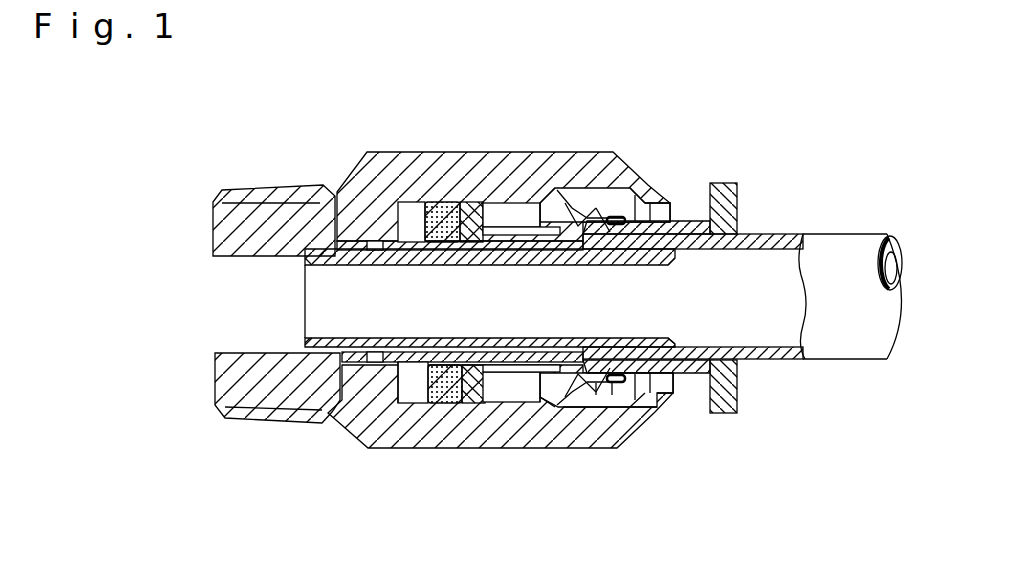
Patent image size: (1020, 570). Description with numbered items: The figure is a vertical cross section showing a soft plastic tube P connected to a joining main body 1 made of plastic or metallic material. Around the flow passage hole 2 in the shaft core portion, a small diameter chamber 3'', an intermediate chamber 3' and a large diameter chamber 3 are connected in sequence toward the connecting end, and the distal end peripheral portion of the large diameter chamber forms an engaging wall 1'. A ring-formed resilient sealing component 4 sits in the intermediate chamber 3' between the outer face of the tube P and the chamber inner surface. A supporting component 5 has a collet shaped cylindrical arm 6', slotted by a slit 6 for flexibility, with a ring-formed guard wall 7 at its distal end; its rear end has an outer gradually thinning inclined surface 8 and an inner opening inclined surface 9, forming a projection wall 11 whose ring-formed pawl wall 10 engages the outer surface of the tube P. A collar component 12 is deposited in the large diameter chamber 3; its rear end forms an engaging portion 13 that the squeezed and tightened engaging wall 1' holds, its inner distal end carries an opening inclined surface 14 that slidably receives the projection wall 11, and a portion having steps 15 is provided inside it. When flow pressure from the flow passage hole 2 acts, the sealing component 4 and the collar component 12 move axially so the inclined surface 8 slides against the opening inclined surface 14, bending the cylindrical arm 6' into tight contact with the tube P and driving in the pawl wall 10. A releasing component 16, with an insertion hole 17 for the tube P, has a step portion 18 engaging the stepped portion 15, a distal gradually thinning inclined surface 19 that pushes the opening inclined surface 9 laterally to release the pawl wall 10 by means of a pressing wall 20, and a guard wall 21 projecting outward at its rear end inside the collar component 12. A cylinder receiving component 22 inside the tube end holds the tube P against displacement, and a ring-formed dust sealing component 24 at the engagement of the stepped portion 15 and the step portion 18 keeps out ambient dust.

The joining main body 1 is at (500, 271).
The engaging wall 1' is at (687, 243).
The flow passage hole 2 is at (317, 293).
The large diameter chamber 3 is at (437, 240).
The intermediate chamber 3' is at (525, 248).
The small diameter chamber 3'' is at (451, 235).
The resilient sealing component 4 is at (446, 215).
The supporting component 5 is at (495, 227).
The slit 6 is at (490, 384).
The cylindrical arm 6' is at (482, 360).
The guard wall 7 is at (455, 380).
The gradually thinning inclined surface 8 is at (560, 372).
The opening inclined surface 9 is at (580, 383).
The pawl wall 10 is at (540, 203).
The projection wall 11 is at (570, 213).
The collar component 12 is at (645, 195).
The engaging portion 13 is at (627, 390).
The opening inclined surface 14 is at (583, 207).
The portion having steps 15 is at (657, 387).
The releasing component 16 is at (728, 192).
The insertion hole 17 is at (670, 300).
The step portion 18 is at (617, 383).
The distal gradually thinning inclined surface 19 is at (590, 380).
The pressing wall 20 is at (617, 217).
The guard wall 21 is at (735, 410).
The cylinder receiving component 22 is at (404, 450).
The dust sealing component 24 is at (690, 222).
The plastic tube P is at (836, 262).